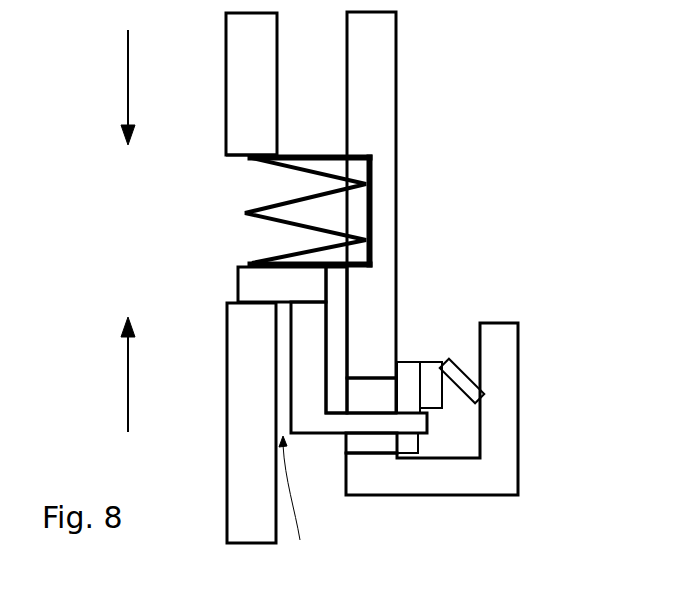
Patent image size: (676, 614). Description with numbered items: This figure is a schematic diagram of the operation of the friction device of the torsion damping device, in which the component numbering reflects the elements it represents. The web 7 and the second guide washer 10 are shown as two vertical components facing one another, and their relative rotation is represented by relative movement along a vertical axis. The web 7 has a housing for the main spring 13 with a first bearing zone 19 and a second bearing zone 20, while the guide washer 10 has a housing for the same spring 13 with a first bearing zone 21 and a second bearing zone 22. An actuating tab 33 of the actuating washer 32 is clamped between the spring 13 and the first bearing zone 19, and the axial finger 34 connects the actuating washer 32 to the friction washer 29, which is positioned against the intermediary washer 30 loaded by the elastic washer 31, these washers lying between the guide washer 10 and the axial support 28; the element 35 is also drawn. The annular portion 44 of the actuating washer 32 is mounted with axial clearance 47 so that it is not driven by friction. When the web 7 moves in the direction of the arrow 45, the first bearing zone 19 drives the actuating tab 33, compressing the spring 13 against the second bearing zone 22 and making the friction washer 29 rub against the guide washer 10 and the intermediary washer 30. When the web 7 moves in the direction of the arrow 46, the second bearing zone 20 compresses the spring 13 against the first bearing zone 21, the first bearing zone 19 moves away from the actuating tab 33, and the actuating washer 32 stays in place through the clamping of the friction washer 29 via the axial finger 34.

The web 7 is at (240, 80).
The second guide washer 10 is at (382, 102).
The main spring 13 is at (330, 198).
The first bearing zone 19 is at (240, 303).
The second bearing zone 20 is at (237, 156).
The first bearing zone 21 is at (367, 261).
The second bearing zone 22 is at (352, 157).
The axial support 28 is at (502, 432).
The friction washer 29 is at (407, 382).
The intermediary washer 30 is at (432, 380).
The elastic washer 31 is at (465, 388).
The actuating washer 32 is at (333, 319).
The actuating tab 33 is at (258, 289).
The axial finger 34 is at (357, 422).
The support 35 is at (377, 440).
The annular portion 44 is at (310, 366).
The arrow 45 is at (122, 402).
The arrow 46 is at (125, 86).
The axial clearance 47 is at (301, 501).